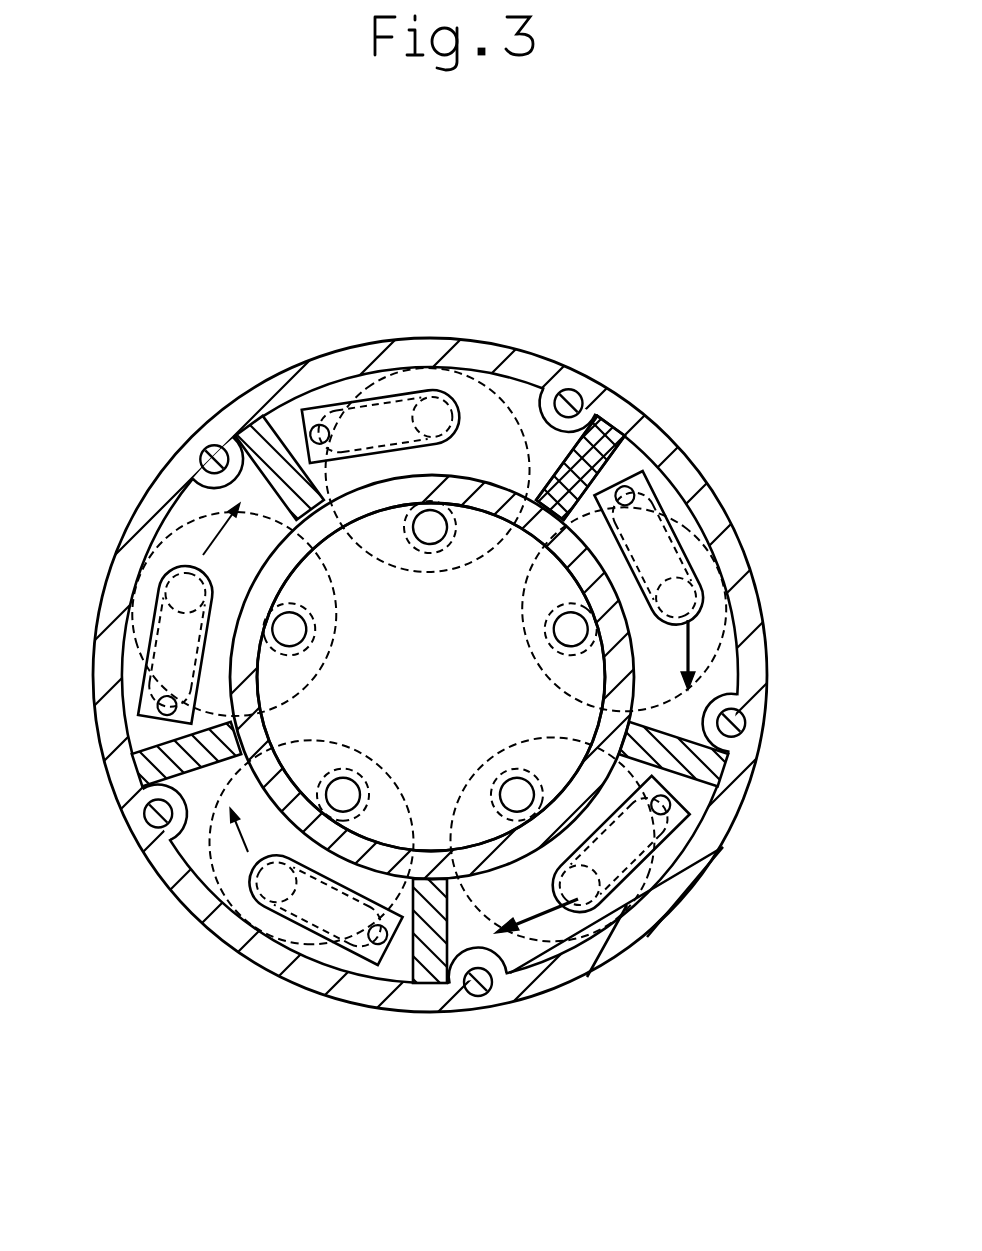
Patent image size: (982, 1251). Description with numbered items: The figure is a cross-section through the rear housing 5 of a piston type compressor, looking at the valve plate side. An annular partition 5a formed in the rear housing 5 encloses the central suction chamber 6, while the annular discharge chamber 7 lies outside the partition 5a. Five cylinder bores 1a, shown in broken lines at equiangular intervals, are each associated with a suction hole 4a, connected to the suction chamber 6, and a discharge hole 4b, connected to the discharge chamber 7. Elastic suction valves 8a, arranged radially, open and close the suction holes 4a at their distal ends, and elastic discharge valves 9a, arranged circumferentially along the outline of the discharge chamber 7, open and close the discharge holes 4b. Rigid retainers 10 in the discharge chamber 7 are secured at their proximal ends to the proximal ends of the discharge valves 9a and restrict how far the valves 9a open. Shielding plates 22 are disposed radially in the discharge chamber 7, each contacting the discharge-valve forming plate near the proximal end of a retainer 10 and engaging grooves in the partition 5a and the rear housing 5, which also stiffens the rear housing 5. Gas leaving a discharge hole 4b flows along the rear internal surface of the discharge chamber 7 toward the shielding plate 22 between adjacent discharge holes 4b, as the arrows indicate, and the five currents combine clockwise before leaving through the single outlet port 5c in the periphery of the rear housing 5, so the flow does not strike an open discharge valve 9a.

The cylinder bore 1a is at (490, 360).
The suction hole 4a is at (437, 543).
The discharge hole 4b is at (463, 348).
The rear housing 5 is at (530, 342).
The annular partition 5a is at (480, 490).
The outlet port 5c is at (583, 420).
The suction chamber 6 is at (416, 698).
The discharge chamber 7 is at (527, 913).
The suction valve 8a is at (432, 659).
The discharge valve 9a is at (355, 365).
The retainer 10 is at (406, 390).
The shielding plate 22 is at (247, 418).